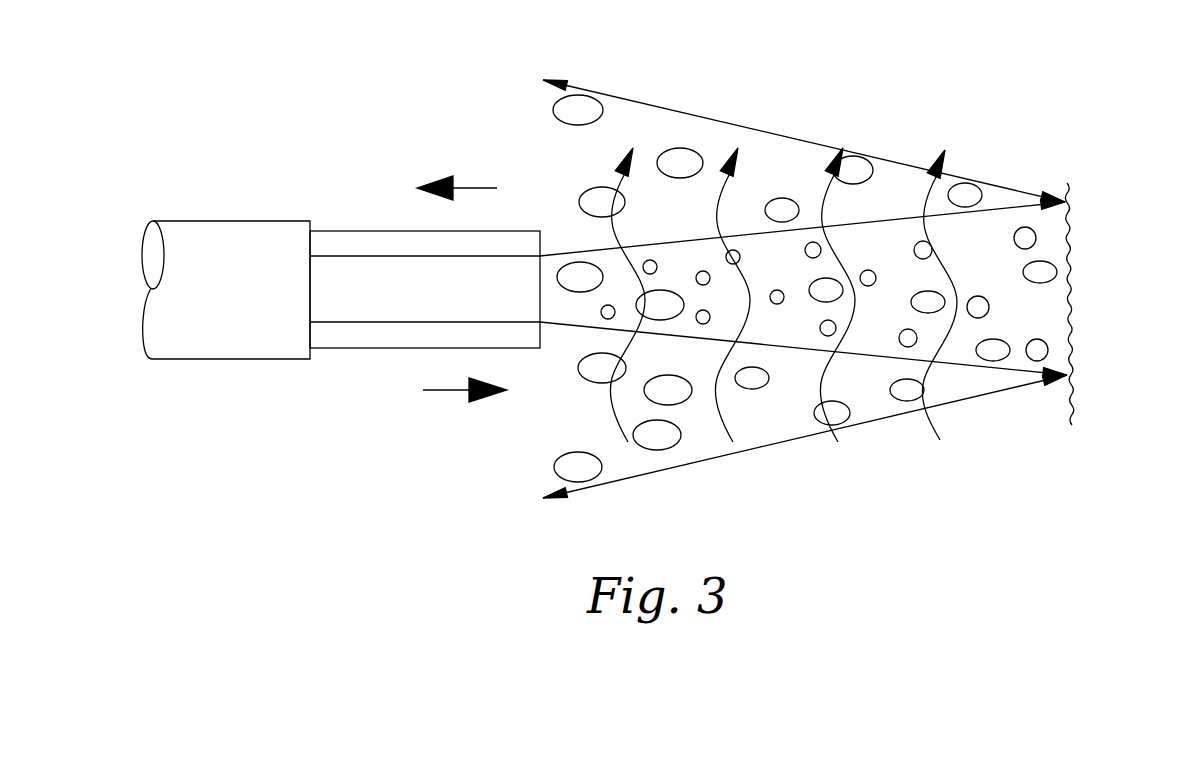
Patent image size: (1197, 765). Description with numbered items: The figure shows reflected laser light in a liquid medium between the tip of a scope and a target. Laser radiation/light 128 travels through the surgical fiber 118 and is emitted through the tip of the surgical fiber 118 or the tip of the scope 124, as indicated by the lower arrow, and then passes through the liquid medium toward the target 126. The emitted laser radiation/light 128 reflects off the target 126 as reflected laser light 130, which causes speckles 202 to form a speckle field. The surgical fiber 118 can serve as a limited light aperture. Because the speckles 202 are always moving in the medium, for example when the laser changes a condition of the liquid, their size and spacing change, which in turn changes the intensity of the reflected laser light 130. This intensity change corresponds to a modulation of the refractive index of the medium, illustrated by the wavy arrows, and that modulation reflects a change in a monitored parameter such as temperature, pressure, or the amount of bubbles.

The surgical fiber 118 is at (235, 221).
The scope 124 is at (390, 348).
The laser radiation/light 128 is at (383, 275).
The reflected laser light 130 is at (770, 446).
The speckles 202 is at (682, 160).
The target 126 is at (1063, 190).